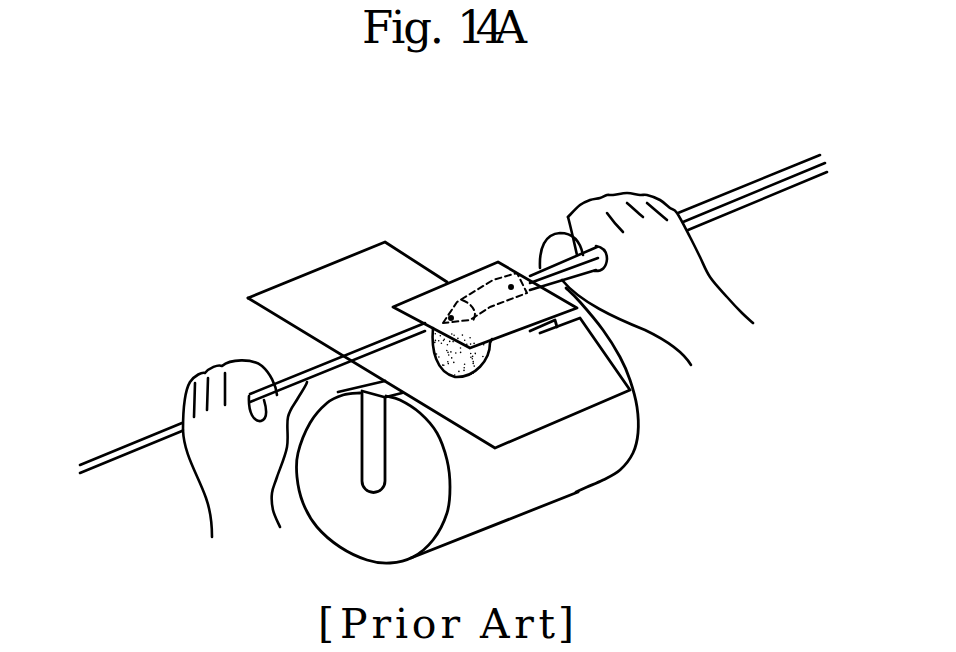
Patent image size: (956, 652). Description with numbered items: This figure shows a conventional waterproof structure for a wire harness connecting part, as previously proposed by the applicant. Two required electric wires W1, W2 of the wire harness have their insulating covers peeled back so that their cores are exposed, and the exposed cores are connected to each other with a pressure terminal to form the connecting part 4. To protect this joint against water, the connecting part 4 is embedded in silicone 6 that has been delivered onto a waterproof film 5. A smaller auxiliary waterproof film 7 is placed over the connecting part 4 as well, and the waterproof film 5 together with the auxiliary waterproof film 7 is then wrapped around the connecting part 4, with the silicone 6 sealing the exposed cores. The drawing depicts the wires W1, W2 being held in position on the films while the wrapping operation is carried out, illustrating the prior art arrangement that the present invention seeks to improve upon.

The connecting part 4 is at (495, 270).
The waterproof film 5 is at (580, 386).
The silicone 6 is at (489, 357).
The auxiliary waterproof film 7 is at (467, 274).
The electric wire W1 is at (307, 382).
The electric wire W2 is at (577, 255).